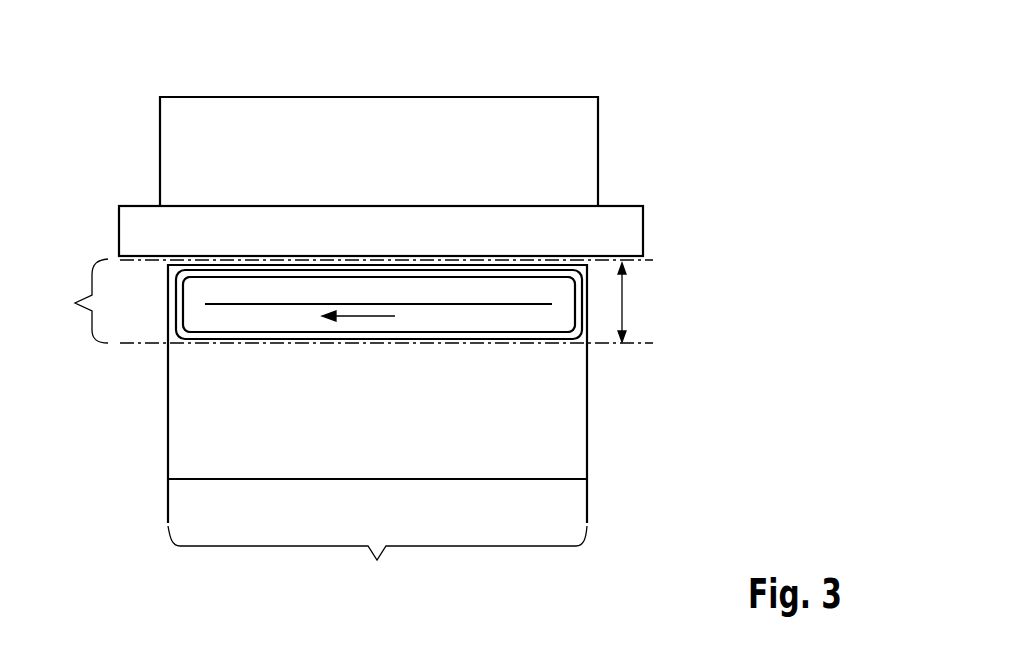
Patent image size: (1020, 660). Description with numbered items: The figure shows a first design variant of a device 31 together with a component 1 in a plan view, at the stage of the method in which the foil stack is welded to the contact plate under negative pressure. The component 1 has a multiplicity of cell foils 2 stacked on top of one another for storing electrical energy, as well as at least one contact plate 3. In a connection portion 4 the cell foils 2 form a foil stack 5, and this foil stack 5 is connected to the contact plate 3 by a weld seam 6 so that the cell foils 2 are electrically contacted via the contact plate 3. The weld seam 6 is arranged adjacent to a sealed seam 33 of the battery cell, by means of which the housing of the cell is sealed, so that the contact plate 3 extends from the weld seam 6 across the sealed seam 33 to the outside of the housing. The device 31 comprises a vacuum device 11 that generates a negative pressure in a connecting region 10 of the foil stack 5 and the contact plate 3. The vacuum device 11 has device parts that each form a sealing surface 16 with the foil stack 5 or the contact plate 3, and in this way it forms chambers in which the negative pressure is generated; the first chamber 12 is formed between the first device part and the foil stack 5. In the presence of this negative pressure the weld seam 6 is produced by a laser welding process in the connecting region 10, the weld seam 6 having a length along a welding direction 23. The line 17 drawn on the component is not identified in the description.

The component 1 is at (740, 273).
The cell foils 2 is at (533, 433).
The contact plate 3 is at (263, 133).
The connection portion 4 is at (627, 303).
The foil stack 5 is at (478, 457).
The weld seam 6 is at (438, 306).
The connecting region 10 is at (312, 428).
The vacuum device 11 is at (200, 323).
The first chamber 12 is at (200, 290).
The sealing surface 16 is at (268, 336).
The separation line 17 is at (290, 457).
The welding direction 23 is at (357, 317).
The device 31 is at (570, 87).
The sealed seam 33 is at (551, 222).